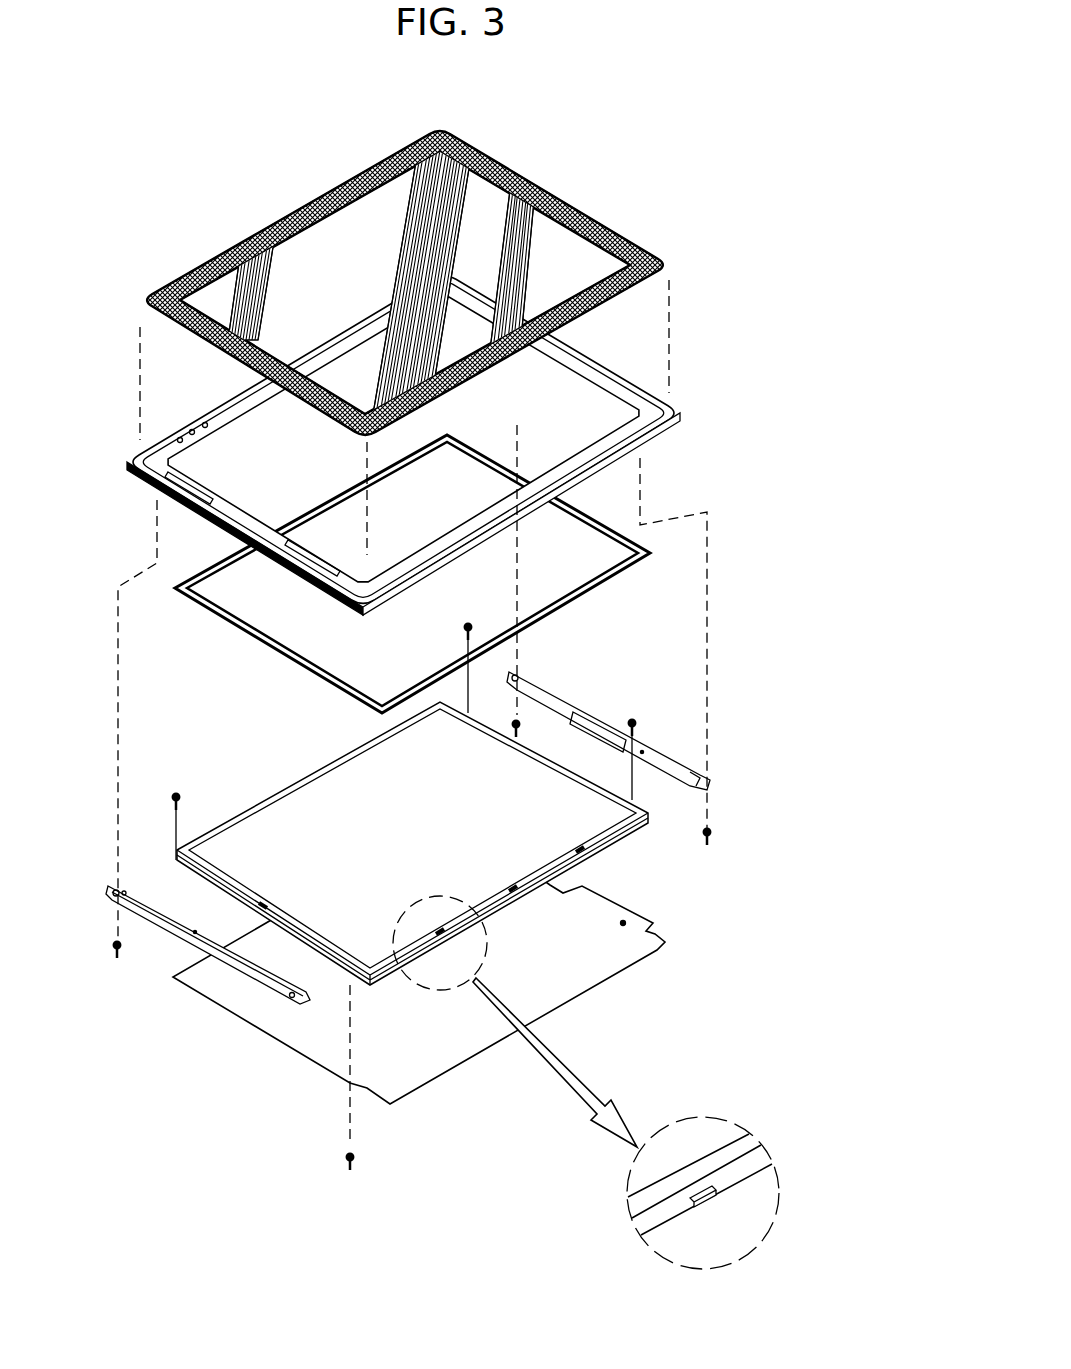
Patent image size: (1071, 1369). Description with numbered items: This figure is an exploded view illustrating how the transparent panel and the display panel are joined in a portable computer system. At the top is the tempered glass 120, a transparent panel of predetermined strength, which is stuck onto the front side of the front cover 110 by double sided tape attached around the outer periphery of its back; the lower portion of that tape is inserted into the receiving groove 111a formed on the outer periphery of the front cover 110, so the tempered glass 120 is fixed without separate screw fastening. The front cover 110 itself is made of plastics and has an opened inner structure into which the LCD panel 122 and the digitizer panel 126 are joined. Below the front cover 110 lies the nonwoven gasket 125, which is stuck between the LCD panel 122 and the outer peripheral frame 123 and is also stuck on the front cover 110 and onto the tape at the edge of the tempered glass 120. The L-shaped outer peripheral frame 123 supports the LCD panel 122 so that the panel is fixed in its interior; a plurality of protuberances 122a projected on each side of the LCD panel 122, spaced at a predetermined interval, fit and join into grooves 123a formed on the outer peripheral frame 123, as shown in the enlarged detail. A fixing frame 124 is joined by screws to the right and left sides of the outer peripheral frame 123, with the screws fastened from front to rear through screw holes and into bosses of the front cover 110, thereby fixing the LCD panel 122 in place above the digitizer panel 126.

The front cover 110 is at (696, 401).
The receiving groove 111a is at (603, 388).
The tempered glass 120 is at (513, 163).
The LCD panel 122 is at (588, 833).
The protuberance 122a is at (712, 1195).
The outer peripheral frame 123 is at (313, 777).
The groove 123a is at (693, 1200).
The fixing frame 124 is at (590, 717).
The nonwoven gasket 125 is at (650, 550).
The digitizer panel 126 is at (532, 997).